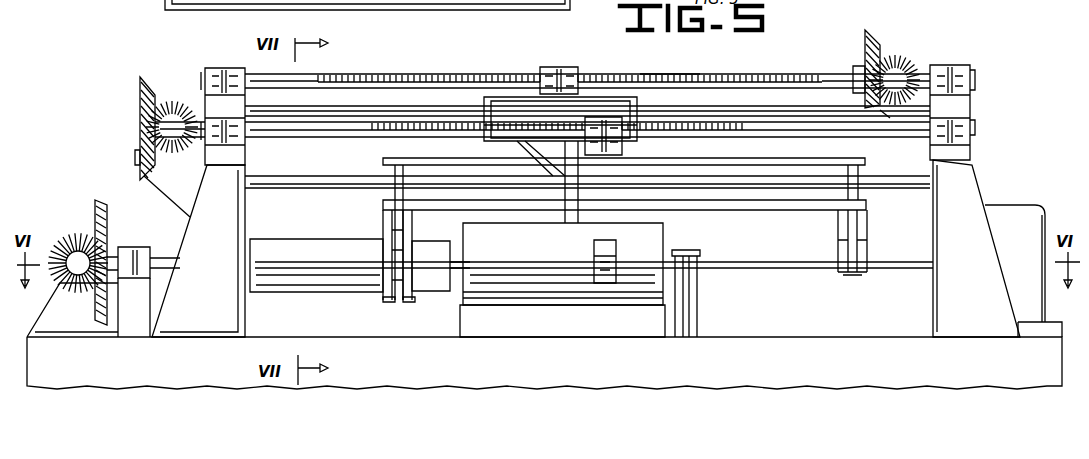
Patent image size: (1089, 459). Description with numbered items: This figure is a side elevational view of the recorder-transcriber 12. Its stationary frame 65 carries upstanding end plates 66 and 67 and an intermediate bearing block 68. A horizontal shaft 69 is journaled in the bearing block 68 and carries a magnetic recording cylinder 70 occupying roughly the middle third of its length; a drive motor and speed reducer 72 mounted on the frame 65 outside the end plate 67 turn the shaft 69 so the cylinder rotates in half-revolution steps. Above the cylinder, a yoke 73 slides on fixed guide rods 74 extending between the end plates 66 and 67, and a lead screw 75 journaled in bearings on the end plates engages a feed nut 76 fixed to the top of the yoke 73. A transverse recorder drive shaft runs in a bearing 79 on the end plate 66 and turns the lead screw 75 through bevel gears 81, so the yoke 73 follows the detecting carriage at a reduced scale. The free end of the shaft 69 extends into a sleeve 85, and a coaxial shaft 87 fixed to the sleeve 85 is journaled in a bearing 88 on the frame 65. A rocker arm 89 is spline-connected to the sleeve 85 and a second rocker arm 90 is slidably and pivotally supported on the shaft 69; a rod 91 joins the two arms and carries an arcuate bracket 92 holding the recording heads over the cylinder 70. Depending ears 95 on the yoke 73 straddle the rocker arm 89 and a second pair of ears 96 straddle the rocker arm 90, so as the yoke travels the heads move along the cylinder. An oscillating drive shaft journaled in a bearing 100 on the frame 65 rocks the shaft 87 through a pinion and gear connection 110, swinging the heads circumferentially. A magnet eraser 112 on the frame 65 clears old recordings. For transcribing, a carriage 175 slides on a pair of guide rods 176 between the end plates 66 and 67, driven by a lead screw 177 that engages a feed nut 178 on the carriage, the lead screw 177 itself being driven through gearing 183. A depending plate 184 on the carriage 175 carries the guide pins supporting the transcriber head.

The recorder-transcriber 12 is at (415, 68).
The stationary frame 65 is at (544, 355).
The end plate 66 is at (198, 202).
The end plate 67 is at (975, 201).
The intermediate bearing block 68 is at (700, 278).
The horizontal shaft 69 is at (910, 270).
The magnetic recording cylinder 70 is at (525, 292).
The speed reducer 72 is at (1005, 205).
The yoke 73 is at (420, 158).
The guide rods 74 is at (300, 188).
The lead screw 75 is at (346, 137).
The feed nut 76 is at (625, 139).
The bearing 79 is at (190, 150).
The bevel gears 81 is at (140, 102).
The sleeve 85 is at (289, 287).
The shaft 87 is at (166, 256).
The bearing 88 is at (136, 247).
The rocker arm 89 is at (395, 270).
The second rocker arm 90 is at (855, 242).
The rod 91 is at (433, 270).
The arcuate bracket 92 is at (611, 270).
The depending ears 95 is at (406, 302).
The second pair of depending ears 96 is at (862, 276).
The bearing 100 is at (72, 310).
The pinion and gear connection 110 is at (78, 235).
The magnet eraser 112 is at (572, 330).
The transcribing carriage 175 is at (503, 97).
The guide rods 176 is at (737, 105).
The lead screw 177 is at (668, 74).
The feed nut 178 is at (557, 68).
The gearing 183 is at (882, 45).
The depending plate 184 is at (580, 195).